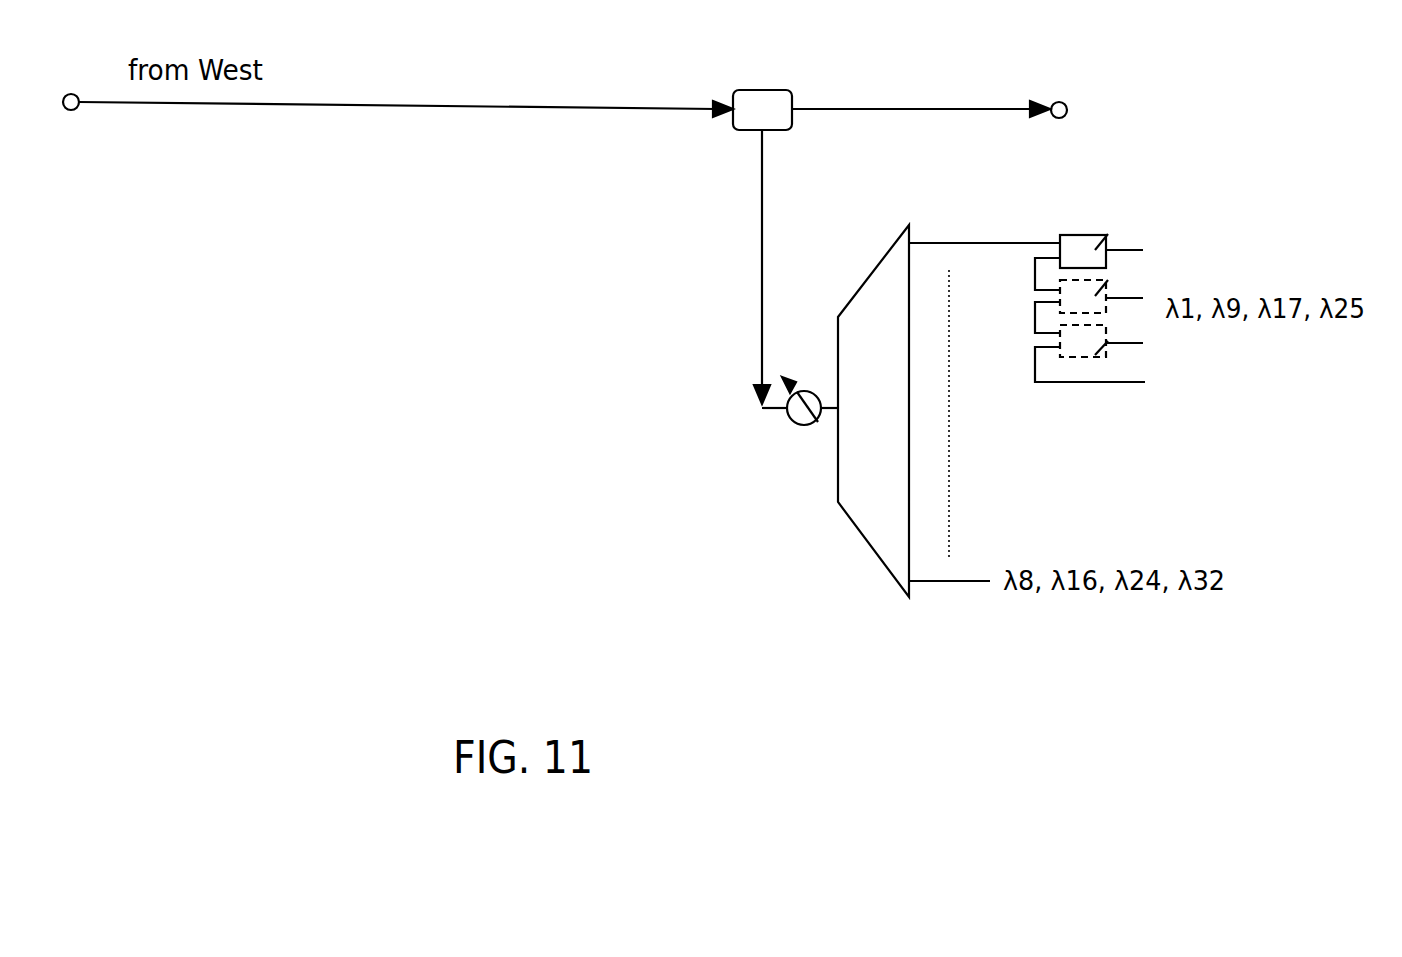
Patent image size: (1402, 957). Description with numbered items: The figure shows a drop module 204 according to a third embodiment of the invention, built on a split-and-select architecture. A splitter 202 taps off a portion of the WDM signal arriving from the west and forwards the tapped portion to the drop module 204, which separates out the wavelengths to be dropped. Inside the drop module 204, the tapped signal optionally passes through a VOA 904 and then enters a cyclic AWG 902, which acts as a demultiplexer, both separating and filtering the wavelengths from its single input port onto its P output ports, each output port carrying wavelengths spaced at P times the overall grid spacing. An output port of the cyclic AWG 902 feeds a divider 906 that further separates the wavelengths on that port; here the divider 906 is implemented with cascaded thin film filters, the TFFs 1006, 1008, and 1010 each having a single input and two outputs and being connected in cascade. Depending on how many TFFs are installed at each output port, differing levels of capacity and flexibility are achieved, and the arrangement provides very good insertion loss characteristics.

The splitter 202 is at (792, 92).
The drop module 204 is at (1041, 700).
The cyclic AWG 902 is at (886, 283).
The VOA 904 is at (792, 387).
The divider 906 is at (1154, 239).
The TFF 1006 is at (1108, 235).
The TFF 1008 is at (1108, 282).
The TFF 1010 is at (1096, 355).